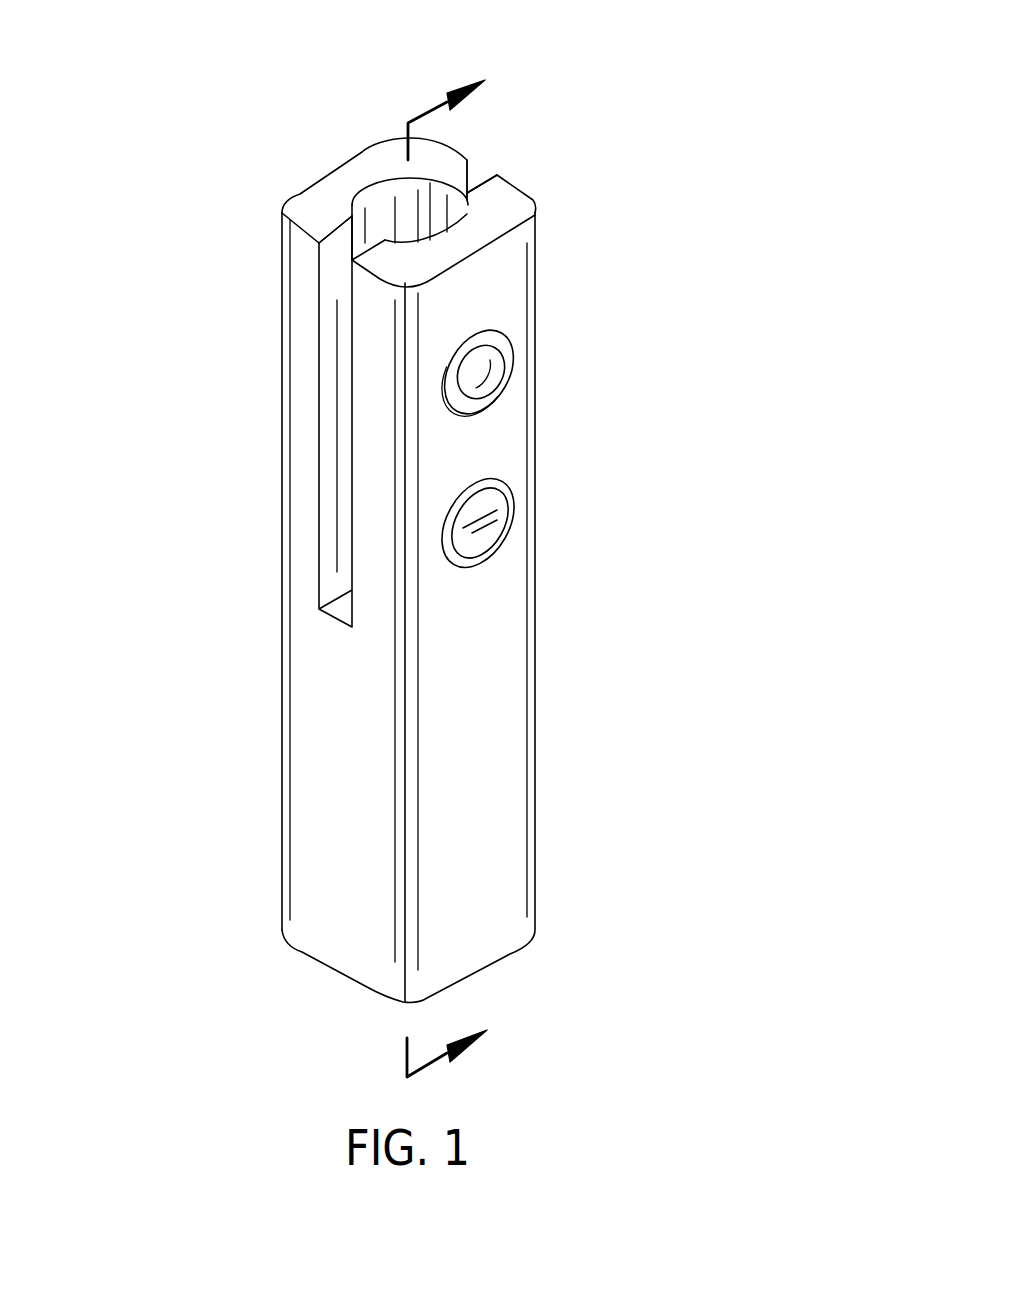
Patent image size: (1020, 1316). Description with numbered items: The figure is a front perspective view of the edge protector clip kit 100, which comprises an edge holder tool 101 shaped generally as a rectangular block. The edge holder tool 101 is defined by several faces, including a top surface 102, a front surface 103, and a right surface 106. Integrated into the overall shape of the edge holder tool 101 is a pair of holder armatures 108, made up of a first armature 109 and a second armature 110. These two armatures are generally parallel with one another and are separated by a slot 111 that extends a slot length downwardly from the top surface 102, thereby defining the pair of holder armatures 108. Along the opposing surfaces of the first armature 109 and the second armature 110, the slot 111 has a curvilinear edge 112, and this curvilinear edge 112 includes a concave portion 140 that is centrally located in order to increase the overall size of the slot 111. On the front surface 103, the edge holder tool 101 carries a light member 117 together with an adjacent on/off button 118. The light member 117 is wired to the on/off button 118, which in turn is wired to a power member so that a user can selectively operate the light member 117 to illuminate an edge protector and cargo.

The edge protector clip kit 100 is at (675, 88).
The edge holder tool 101 is at (535, 925).
The top surface 102 is at (318, 198).
The front surface 103 is at (490, 690).
The right surface 106 is at (310, 772).
The pair of holder armatures 108 is at (367, 378).
The first armature 109 is at (297, 512).
The second armature 110 is at (367, 435).
The slot 111 is at (370, 185).
The curvilinear edge 112 is at (467, 212).
The light member 117 is at (498, 370).
The on/off button 118 is at (482, 516).
The concave portion 140 is at (362, 249).